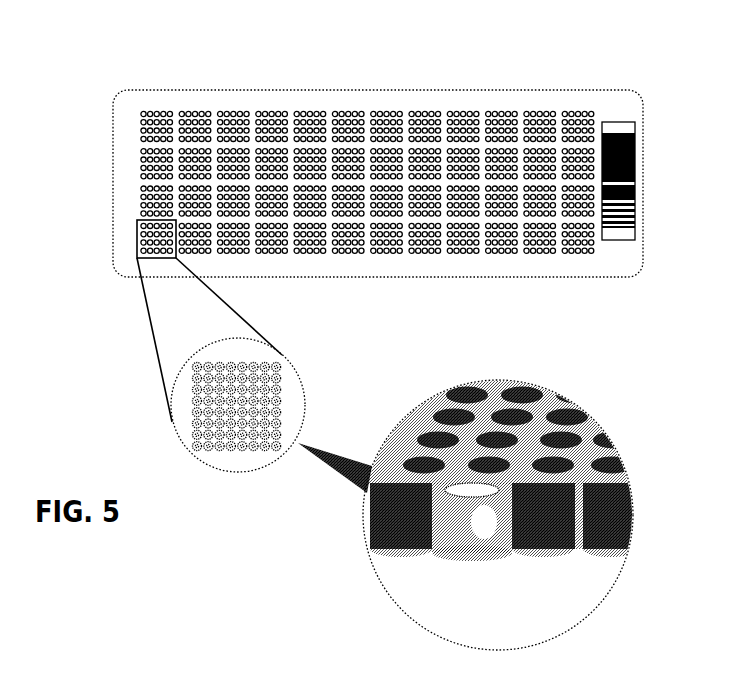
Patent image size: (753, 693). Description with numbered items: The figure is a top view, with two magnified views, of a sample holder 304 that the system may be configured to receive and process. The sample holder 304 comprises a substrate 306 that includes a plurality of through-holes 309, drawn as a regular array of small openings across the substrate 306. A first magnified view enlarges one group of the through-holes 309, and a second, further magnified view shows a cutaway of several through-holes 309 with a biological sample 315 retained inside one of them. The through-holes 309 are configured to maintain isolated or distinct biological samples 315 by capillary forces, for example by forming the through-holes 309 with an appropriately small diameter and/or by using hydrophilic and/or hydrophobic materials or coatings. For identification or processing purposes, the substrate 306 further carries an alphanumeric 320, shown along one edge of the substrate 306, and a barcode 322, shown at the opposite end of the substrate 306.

The sample holder 304 is at (110, 47).
The substrate 306 is at (420, 98).
The through-holes 309 is at (142, 140).
The biological samples 315 is at (472, 522).
The alphanumeric 320 is at (100, 158).
The barcode 322 is at (656, 146).